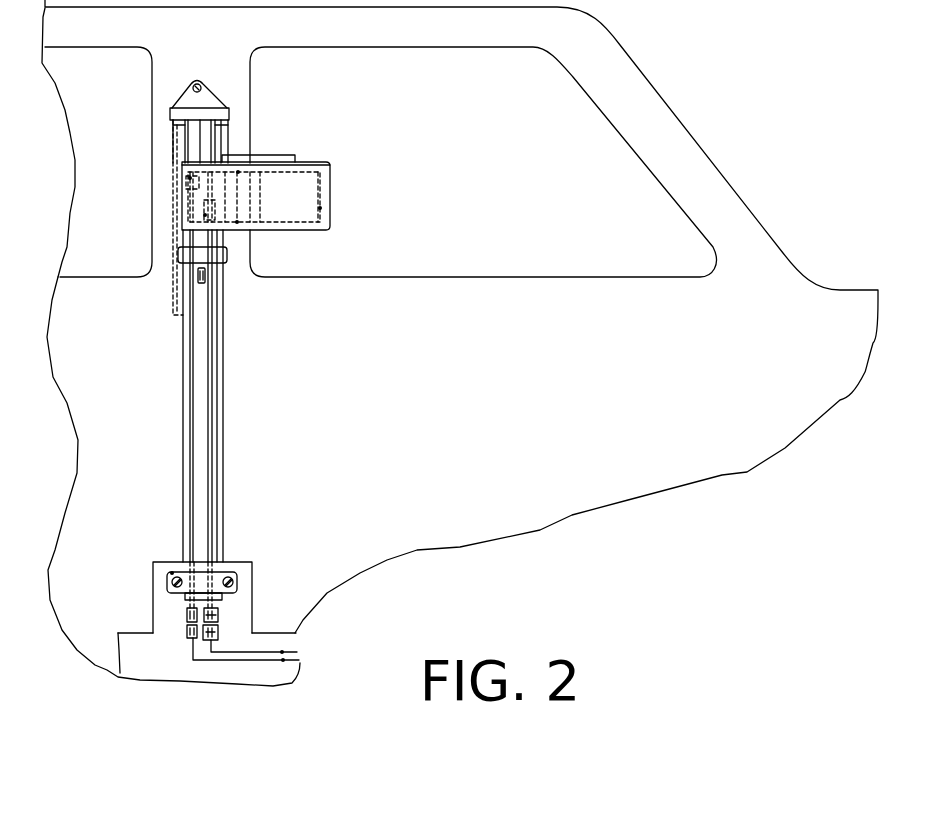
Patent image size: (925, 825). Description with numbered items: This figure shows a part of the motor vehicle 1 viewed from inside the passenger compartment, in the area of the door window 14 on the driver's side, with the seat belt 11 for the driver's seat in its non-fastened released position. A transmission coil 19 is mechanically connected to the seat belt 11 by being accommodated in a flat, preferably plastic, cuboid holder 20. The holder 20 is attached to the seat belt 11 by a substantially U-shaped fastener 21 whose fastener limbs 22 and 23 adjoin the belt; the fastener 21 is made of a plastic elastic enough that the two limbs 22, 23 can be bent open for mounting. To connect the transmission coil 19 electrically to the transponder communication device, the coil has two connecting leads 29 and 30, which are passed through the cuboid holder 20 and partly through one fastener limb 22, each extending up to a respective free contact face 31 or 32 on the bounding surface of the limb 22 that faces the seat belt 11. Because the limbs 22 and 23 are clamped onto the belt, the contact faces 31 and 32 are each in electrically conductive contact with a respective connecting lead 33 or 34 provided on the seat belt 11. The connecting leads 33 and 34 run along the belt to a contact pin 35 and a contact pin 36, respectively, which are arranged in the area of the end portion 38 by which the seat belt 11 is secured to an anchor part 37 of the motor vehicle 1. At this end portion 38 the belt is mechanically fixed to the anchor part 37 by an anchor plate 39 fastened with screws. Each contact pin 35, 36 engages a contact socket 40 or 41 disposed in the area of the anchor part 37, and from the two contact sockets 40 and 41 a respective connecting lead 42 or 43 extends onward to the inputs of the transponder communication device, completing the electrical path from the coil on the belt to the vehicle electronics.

The motor vehicle 1 is at (723, 80).
The door frame 14 is at (602, 75).
The seat belt 11 is at (243, 276).
The U-shaped fastener 21 is at (178, 181).
The connecting lead 29 is at (238, 172).
The fastener limb 23 is at (268, 156).
The cuboid holder 20 is at (319, 163).
The transmission coil 19 is at (321, 208).
The connecting lead 30 is at (238, 223).
The contact face 31 is at (187, 176).
The contact face 32 is at (204, 215).
The fastener limb 22 is at (188, 220).
The connecting lead 33 is at (194, 475).
The connecting lead 34 is at (210, 475).
The anchor part 37 is at (243, 564).
The anchor plate 39 is at (172, 573).
The end portion 38 is at (158, 594).
The contact pin 35 is at (187, 615).
The contact pin 36 is at (218, 612).
The contact socket 40 is at (187, 632).
The contact socket 41 is at (218, 630).
The connecting lead 42 is at (284, 660).
The connecting lead 43 is at (283, 652).